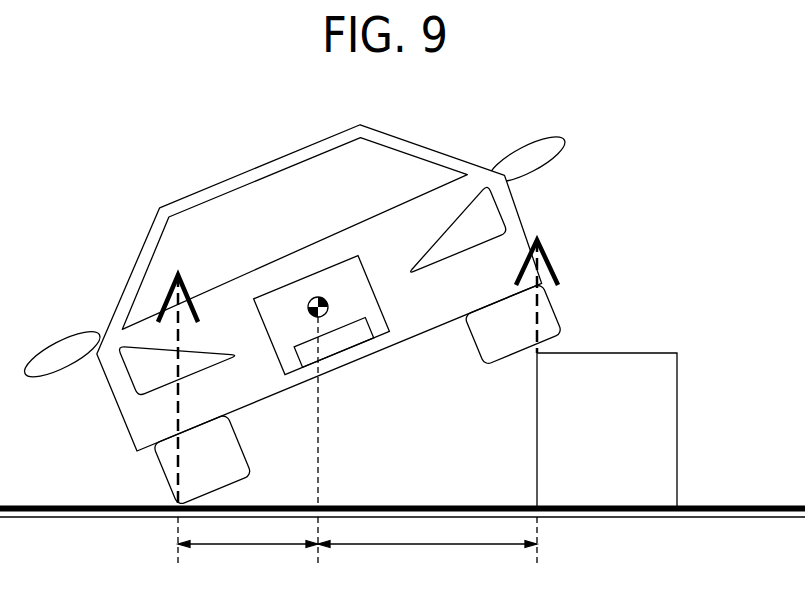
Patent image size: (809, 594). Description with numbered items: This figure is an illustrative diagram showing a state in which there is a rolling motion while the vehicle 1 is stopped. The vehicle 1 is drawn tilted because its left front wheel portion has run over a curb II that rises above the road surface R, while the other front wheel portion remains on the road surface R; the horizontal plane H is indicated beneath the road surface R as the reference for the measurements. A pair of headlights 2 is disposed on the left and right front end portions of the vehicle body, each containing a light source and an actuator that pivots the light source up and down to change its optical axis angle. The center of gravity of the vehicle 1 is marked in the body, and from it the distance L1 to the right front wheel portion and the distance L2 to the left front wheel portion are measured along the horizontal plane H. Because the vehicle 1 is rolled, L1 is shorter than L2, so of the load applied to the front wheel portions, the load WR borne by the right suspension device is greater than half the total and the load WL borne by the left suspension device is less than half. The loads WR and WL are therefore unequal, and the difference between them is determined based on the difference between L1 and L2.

The vehicle 1 is at (261, 167).
The headlight 2 is at (490, 223).
The load applied to right suspension device WR is at (177, 335).
The load applied to left suspension device WL is at (540, 308).
The curb II is at (667, 403).
The road surface R is at (738, 504).
The horizontal plane H is at (752, 519).
The distance between center of gravity and right front wheel portion L1 is at (248, 547).
The distance between center of gravity and left front wheel portion L2 is at (427, 547).